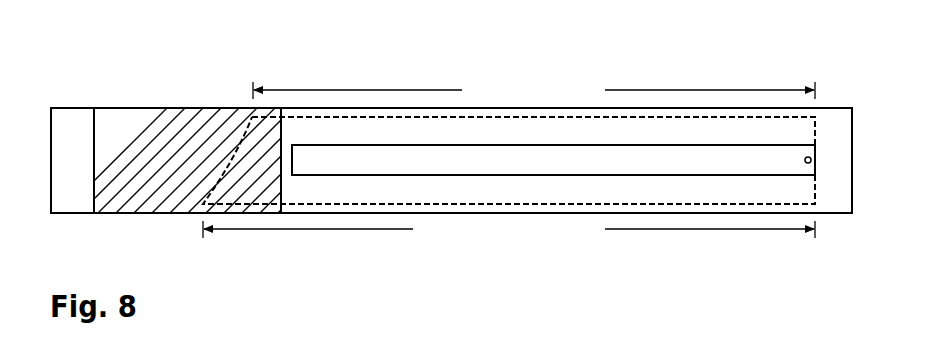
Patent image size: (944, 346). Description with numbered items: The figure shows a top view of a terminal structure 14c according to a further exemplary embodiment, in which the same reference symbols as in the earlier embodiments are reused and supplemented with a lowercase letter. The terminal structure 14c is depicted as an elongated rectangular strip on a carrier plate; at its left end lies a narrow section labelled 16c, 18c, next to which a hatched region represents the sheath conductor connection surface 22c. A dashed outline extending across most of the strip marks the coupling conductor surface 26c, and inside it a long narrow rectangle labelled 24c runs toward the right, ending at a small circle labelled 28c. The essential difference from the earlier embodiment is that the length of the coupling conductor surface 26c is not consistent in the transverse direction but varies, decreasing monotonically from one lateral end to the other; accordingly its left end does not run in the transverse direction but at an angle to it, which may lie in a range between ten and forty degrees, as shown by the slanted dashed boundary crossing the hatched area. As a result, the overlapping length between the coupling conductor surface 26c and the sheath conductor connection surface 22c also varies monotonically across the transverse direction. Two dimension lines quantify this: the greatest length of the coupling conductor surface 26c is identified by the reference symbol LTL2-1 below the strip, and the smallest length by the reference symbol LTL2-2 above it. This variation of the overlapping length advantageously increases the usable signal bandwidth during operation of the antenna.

The terminal structure 14c is at (439, 64).
The first section 16c is at (71, 127).
The second section 18c is at (72, 160).
The sheath conductor connection surface 22c is at (202, 127).
The inner element 24c is at (523, 168).
The coupling conductor surface 26c is at (568, 204).
The terminal point 28c is at (806, 157).
The greatest length LTL2-1 is at (509, 231).
The smallest length LTL2-2 is at (534, 93).